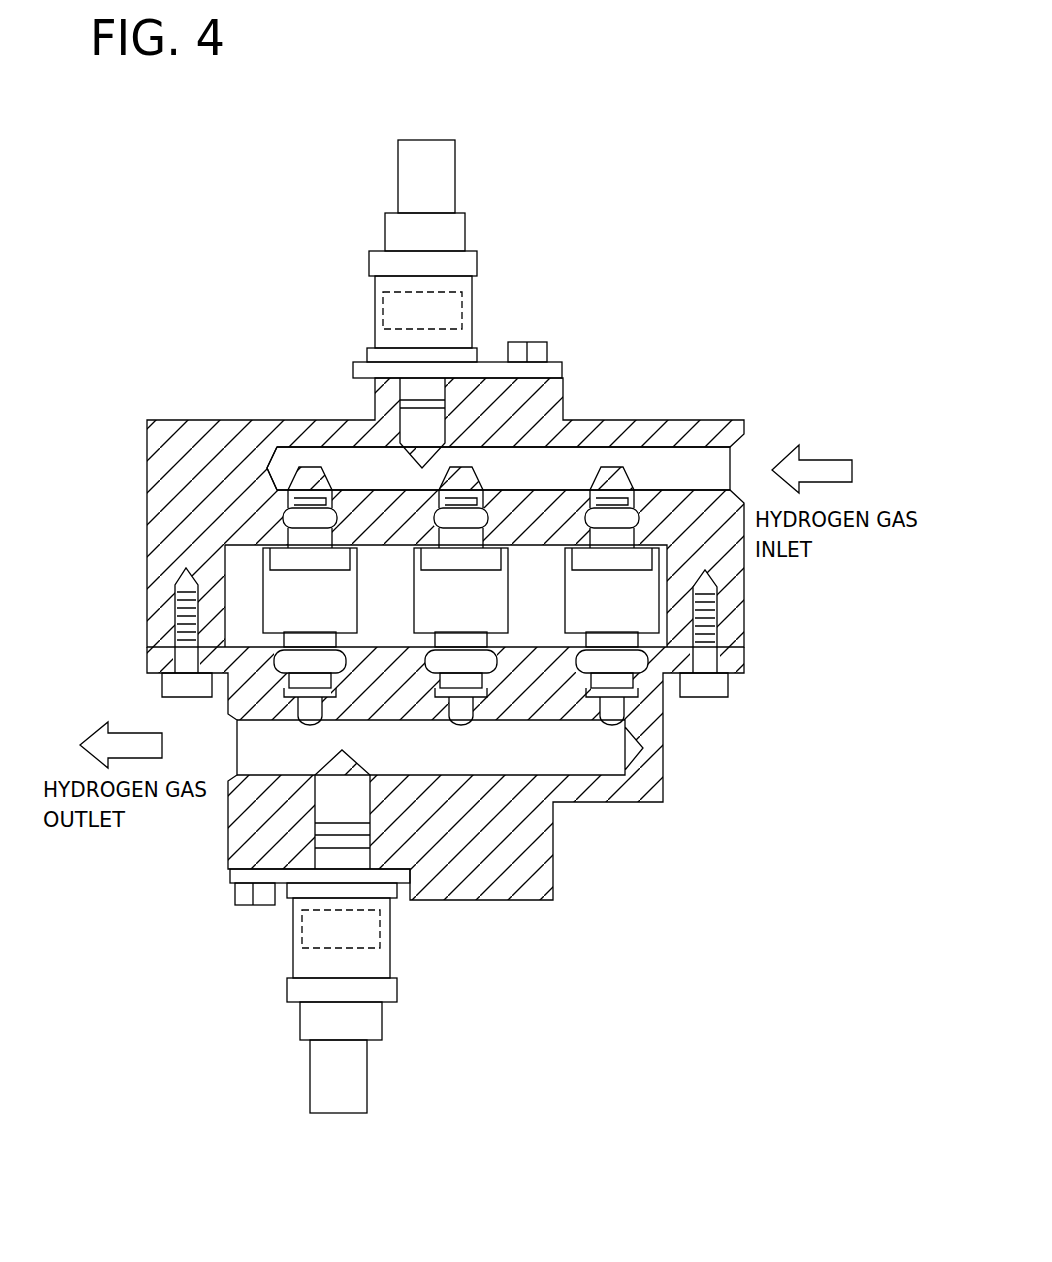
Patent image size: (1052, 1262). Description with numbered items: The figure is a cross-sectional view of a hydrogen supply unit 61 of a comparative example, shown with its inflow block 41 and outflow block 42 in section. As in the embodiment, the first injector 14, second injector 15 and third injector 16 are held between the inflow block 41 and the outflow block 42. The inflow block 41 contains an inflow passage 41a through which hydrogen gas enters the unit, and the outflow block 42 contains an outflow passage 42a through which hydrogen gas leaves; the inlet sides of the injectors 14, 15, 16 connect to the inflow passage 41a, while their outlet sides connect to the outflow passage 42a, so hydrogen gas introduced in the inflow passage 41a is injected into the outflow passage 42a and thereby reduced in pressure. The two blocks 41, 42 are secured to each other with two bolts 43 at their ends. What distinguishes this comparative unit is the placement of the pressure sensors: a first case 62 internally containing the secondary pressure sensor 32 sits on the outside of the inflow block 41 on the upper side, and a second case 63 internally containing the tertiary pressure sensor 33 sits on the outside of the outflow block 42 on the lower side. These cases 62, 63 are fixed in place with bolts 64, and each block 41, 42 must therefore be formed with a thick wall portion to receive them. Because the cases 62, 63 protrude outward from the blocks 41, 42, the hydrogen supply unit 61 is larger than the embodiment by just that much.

The hydrogen supply unit 61 is at (582, 205).
The first case 62 is at (473, 285).
The second case 63 is at (295, 967).
The bolt 64 is at (537, 347).
The secondary pressure sensor 32 is at (376, 307).
The tertiary pressure sensor 33 is at (303, 937).
The inflow block 41 is at (220, 420).
The inflow passage 41a is at (662, 450).
The outflow block 42 is at (665, 792).
The outflow passage 42a is at (573, 762).
The bolt 43 is at (170, 682).
The first injector 14 is at (263, 620).
The second injector 15 is at (413, 617).
The third injector 16 is at (563, 617).